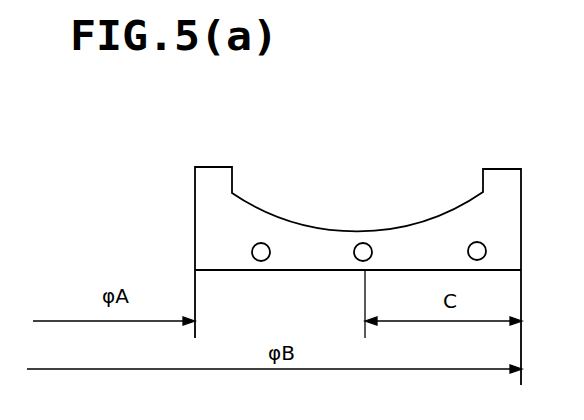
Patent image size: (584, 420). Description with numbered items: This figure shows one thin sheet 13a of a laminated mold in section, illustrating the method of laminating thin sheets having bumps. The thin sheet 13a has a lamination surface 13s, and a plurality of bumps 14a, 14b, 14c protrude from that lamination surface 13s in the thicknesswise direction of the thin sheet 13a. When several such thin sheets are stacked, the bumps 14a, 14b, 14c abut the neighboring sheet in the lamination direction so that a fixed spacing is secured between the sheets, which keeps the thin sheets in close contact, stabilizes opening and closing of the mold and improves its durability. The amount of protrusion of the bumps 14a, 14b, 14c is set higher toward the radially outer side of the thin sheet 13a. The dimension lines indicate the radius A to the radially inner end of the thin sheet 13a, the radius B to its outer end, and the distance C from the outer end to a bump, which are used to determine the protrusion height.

The lamination surface 13s is at (218, 200).
The thin sheet 13a is at (512, 176).
The bump 14a is at (266, 233).
The bump 14b is at (366, 234).
The bump 14c is at (471, 232).